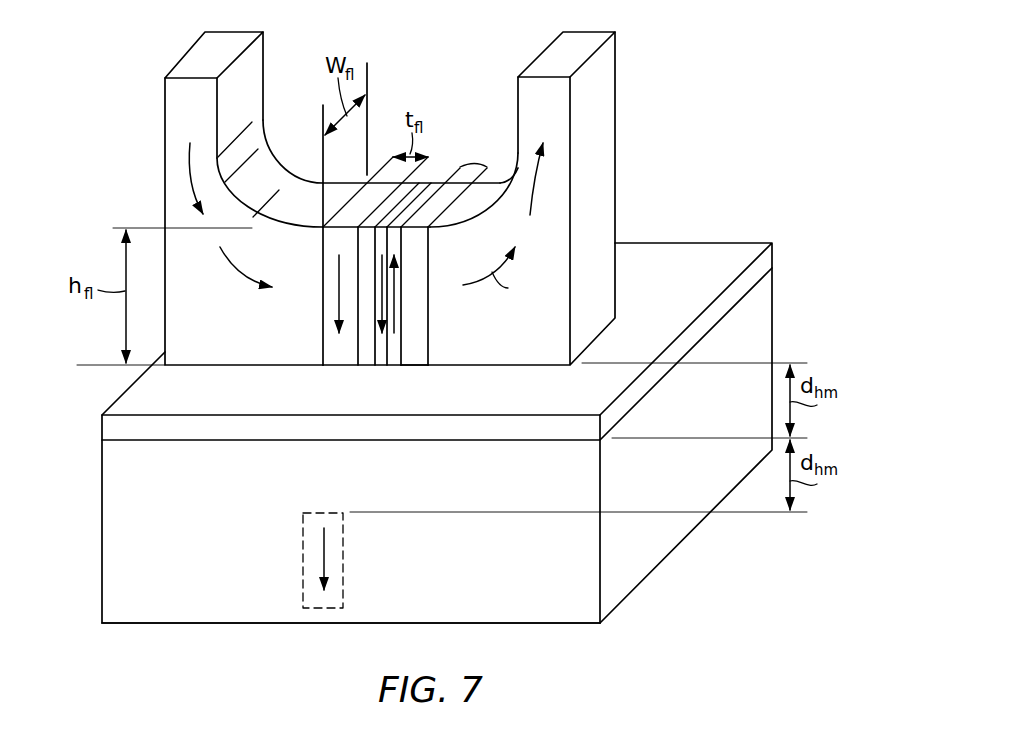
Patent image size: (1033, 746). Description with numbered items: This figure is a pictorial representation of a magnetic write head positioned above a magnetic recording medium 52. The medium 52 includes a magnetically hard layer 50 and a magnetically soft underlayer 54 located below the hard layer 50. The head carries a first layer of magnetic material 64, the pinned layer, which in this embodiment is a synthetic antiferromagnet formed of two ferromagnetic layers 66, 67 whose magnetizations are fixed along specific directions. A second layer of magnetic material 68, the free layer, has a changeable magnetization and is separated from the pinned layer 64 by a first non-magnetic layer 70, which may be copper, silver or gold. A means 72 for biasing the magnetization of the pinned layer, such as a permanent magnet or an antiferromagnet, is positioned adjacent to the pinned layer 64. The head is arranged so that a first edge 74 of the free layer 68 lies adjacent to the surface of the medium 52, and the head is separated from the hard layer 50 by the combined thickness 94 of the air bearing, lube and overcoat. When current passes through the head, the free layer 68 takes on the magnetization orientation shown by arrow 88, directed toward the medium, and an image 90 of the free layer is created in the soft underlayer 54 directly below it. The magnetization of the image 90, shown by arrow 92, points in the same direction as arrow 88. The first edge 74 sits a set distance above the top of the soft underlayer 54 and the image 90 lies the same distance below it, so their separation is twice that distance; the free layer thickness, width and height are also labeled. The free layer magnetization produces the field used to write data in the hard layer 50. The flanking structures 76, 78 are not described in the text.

The magnetically hard layer 50 is at (770, 263).
The magnetic recording medium 52 is at (103, 642).
The magnetically soft underlayer 54 is at (635, 562).
The first layer of magnetic material 64 is at (482, 163).
The ferromagnetic layer 66 is at (382, 358).
The ferromagnetic layer 67 is at (395, 363).
The second layer of magnetic material 68 is at (345, 358).
The first non-magnetic layer 70 is at (363, 358).
The means for biasing the magnetization of the pinned layer 72 is at (422, 368).
The first edge of the free layer 74 is at (333, 366).
The right flange 76 is at (607, 132).
The left flange 78 is at (172, 160).
The arrow 88 is at (340, 309).
The image of the free layer 90 is at (303, 578).
The arrow 92 is at (325, 560).
The combined thickness 94 is at (81, 365).